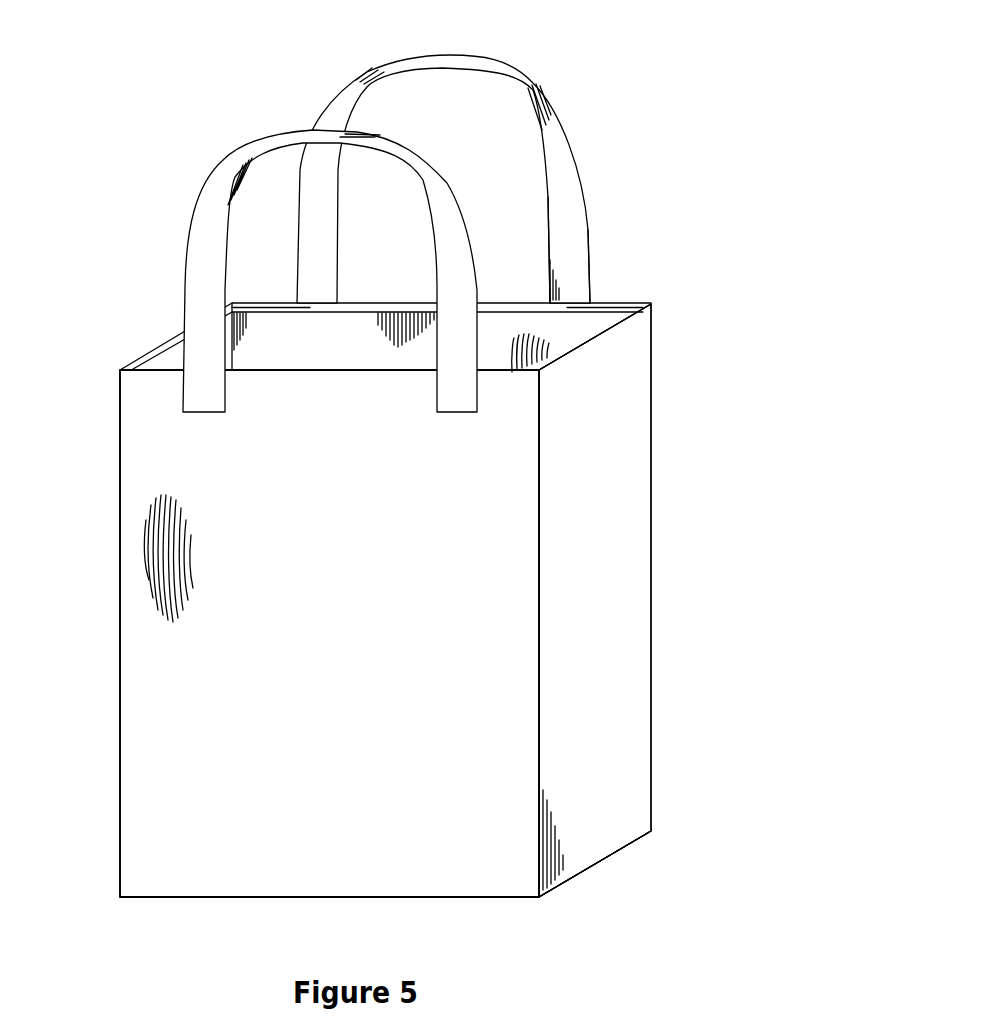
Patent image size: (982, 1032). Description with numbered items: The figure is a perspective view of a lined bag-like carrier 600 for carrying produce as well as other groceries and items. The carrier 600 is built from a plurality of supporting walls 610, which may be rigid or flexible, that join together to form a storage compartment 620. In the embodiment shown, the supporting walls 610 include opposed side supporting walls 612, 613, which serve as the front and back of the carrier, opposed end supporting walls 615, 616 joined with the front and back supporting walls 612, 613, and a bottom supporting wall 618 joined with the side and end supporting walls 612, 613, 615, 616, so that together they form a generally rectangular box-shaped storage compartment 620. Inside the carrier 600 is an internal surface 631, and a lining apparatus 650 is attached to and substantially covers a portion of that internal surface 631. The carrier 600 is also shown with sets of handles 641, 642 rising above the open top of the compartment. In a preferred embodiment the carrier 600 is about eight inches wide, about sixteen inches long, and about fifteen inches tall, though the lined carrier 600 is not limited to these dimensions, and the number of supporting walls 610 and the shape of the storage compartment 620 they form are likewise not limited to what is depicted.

The lined bag-like carrier 600 is at (87, 75).
The supporting walls 610 is at (407, 855).
The side supporting wall 612 is at (197, 701).
The side supporting wall 613 is at (533, 303).
The end supporting wall 615 is at (147, 353).
The end supporting wall 616 is at (607, 590).
The bottom supporting wall 618 is at (297, 897).
The storage compartment 620 is at (555, 342).
The internal surface 631 is at (267, 340).
The handle 641 is at (293, 130).
The handle 642 is at (515, 62).
The lining apparatus 650 is at (513, 313).